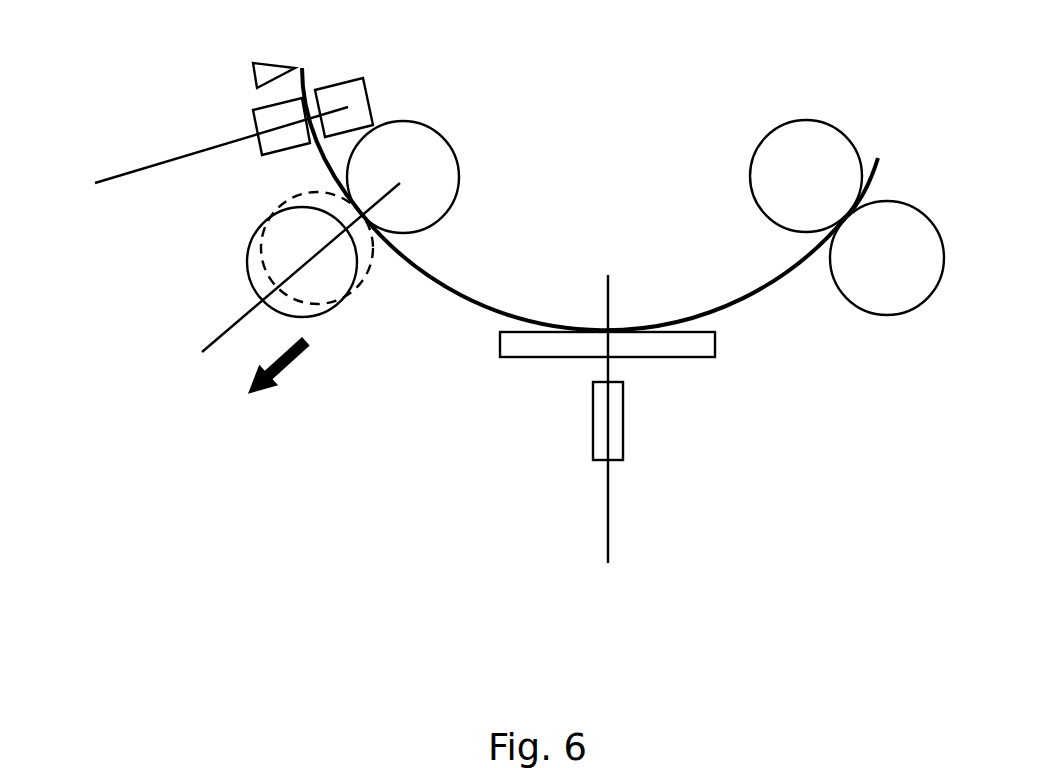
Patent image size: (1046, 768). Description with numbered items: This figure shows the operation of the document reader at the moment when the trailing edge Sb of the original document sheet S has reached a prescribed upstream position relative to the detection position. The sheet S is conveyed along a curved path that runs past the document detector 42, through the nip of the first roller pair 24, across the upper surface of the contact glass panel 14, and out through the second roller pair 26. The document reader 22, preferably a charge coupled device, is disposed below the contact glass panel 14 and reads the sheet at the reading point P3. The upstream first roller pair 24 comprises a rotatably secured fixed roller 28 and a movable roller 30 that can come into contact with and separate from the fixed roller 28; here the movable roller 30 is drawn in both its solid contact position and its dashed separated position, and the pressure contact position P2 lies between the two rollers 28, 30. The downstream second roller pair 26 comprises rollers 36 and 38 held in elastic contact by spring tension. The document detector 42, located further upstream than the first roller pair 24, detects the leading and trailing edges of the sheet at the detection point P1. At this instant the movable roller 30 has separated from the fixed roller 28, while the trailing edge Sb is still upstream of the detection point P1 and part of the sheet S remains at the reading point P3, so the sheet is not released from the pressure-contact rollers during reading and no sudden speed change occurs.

The contact glass panel 14 is at (523, 357).
The document reader 22 is at (623, 460).
The first roller pair 24 is at (388, 216).
The second roller pair 26 is at (852, 191).
The fixed roller 28 is at (442, 222).
The movable roller 30 is at (318, 317).
The roller 36 is at (788, 122).
The roller 38 is at (910, 307).
The document detector 42 is at (357, 78).
The original document sheet S is at (758, 288).
The original document sheet trailing edge Sb is at (256, 67).
The detection point P1 is at (205, 161).
The pressure contact position P2 is at (295, 289).
The reading point P3 is at (611, 439).